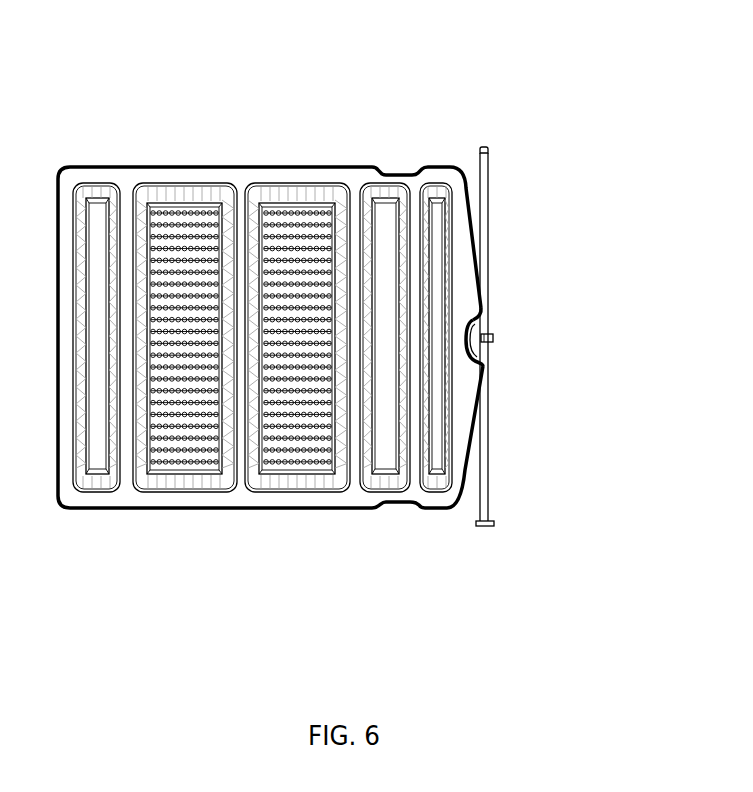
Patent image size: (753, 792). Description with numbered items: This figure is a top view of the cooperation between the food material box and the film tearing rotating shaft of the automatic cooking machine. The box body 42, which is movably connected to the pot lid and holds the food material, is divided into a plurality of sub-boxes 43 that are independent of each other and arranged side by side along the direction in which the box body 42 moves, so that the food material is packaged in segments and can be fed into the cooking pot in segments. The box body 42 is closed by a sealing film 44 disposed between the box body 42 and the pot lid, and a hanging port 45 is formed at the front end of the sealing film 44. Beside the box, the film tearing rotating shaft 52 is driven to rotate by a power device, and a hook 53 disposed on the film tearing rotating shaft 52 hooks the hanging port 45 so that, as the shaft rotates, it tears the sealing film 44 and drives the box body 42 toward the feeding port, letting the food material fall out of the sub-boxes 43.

The box body 42 is at (388, 186).
The sub-boxes 43 is at (442, 402).
The sealing film 44 is at (487, 322).
The hanging port 45 is at (488, 343).
The film tearing rotating shaft 52 is at (488, 228).
The hook 53 is at (493, 338).